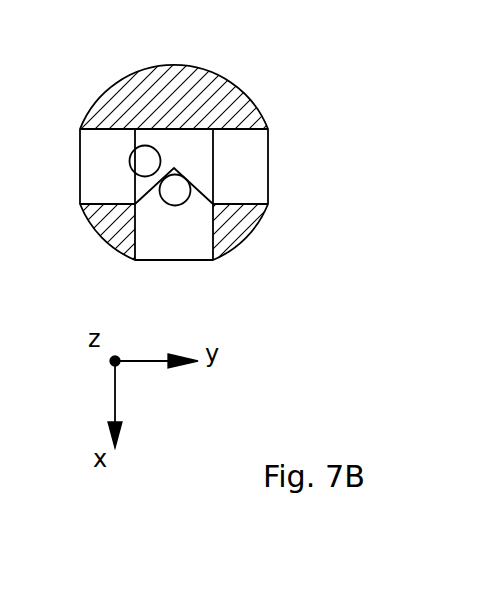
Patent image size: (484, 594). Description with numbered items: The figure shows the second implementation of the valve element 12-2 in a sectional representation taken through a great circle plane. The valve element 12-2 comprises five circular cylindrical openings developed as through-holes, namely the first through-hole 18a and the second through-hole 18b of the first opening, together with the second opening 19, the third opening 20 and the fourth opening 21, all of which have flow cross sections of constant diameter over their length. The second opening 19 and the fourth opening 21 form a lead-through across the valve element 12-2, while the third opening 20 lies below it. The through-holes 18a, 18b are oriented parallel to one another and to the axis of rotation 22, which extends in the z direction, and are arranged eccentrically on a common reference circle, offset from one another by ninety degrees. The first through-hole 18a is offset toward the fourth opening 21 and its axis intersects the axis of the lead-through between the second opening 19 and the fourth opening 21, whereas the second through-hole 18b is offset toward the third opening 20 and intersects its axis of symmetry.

The valve element 12-2 is at (283, 92).
The first through-hole 18a is at (142, 158).
The second through-hole 18b is at (182, 193).
The second opening 19 is at (248, 172).
The third opening 20 is at (173, 240).
The fourth opening 21 is at (104, 172).
The axis of rotation 22 is at (174, 168).